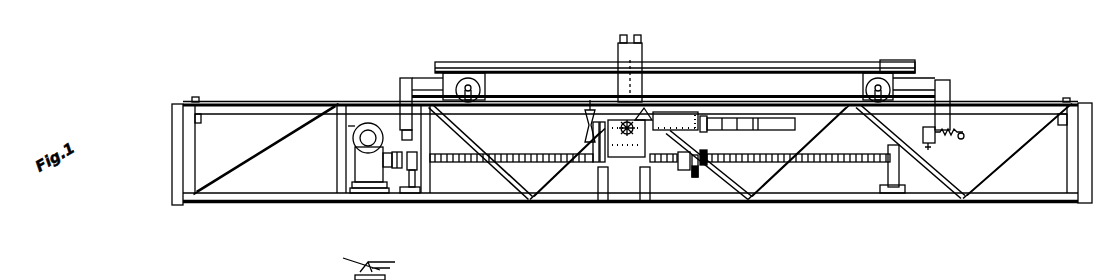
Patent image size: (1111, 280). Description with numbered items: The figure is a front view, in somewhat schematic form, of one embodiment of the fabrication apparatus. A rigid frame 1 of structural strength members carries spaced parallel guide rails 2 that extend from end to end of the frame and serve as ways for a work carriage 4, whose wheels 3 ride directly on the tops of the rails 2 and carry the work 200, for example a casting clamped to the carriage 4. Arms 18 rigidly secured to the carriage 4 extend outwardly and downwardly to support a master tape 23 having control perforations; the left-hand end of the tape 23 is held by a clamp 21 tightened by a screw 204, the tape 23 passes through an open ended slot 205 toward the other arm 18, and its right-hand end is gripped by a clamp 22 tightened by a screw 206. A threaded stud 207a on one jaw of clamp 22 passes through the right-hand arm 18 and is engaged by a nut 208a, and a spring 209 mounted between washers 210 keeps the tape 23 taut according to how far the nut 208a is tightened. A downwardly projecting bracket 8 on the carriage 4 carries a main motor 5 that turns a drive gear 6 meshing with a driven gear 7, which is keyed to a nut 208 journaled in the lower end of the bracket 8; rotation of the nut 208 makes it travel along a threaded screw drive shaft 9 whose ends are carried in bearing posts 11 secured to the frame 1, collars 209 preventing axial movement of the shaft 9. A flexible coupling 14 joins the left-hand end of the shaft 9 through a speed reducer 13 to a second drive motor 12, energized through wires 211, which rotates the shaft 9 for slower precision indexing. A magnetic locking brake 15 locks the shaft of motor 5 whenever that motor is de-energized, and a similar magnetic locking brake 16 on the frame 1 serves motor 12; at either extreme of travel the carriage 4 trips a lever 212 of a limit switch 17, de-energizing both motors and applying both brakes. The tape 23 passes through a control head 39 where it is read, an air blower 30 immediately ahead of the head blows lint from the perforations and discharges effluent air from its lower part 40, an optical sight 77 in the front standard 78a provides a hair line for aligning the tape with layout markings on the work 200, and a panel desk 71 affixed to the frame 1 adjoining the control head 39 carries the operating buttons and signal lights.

The rigid frame 1 is at (1021, 158).
The guide rails 2 is at (1011, 100).
The wheels 3 is at (896, 66).
The work carriage 4 is at (812, 62).
The main motor 5 is at (731, 130).
The drive gear 6 is at (699, 137).
The driven gear 7 is at (695, 176).
The bracket 8 is at (677, 161).
The threaded screw drive shaft 9 is at (840, 163).
The bearing posts 11 is at (420, 181).
The second drive motor 12 is at (348, 126).
The speed reducer 13 is at (352, 172).
The flexible coupling 14 is at (386, 183).
The magnetic locking brake 15 is at (775, 130).
The magnetic locking brake 16 is at (412, 275).
The limit switch 17 is at (204, 121).
The arms 18 is at (402, 80).
The clamp 21 is at (406, 136).
The clamp 22 is at (939, 127).
The master tape 23 is at (533, 138).
The air blower 30 is at (586, 122).
The control head 39 is at (623, 158).
The lower part of blower 40 is at (582, 141).
The panel desk 71 is at (673, 115).
The optical sight 77 is at (633, 42).
The front standard 78a is at (642, 52).
The work 200 is at (752, 62).
The screw 204 is at (401, 139).
The open ended slot 205 is at (450, 145).
The screw 206 is at (942, 154).
The threaded stud 207a is at (964, 131).
The nut 208 is at (684, 172).
The nut 208a is at (963, 137).
The collars 209 is at (412, 175).
The washers 210 is at (944, 128).
The wires 211 is at (358, 266).
The lever 212 is at (195, 97).